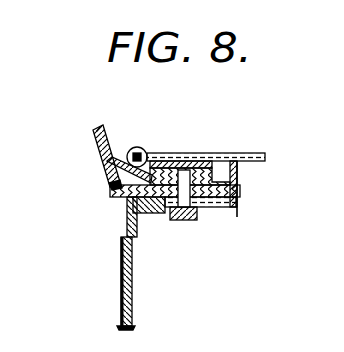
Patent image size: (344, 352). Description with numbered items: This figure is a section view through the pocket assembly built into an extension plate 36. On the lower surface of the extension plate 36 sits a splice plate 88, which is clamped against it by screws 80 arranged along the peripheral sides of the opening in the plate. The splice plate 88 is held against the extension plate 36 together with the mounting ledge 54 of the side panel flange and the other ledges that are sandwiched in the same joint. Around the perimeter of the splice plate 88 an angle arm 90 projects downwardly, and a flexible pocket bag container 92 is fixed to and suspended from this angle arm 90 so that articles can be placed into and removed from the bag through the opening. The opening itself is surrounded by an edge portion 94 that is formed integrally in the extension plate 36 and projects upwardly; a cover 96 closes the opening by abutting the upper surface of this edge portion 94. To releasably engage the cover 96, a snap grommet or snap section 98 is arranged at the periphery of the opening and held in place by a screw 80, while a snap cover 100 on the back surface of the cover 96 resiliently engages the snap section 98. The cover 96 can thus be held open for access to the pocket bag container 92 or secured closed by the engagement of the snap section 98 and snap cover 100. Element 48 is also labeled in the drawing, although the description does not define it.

The extension plate 36 is at (234, 211).
The hinge arm 48 is at (110, 144).
The mounting ledge 54 is at (210, 208).
The screw 80 is at (164, 215).
The splice plate 88 is at (136, 222).
The angle arm 90 is at (126, 225).
The pocket bag container 92 is at (122, 290).
The edge portion 94 is at (237, 182).
The cover 96 is at (229, 153).
The snap section 98 is at (111, 166).
The snap cover 100 is at (182, 152).